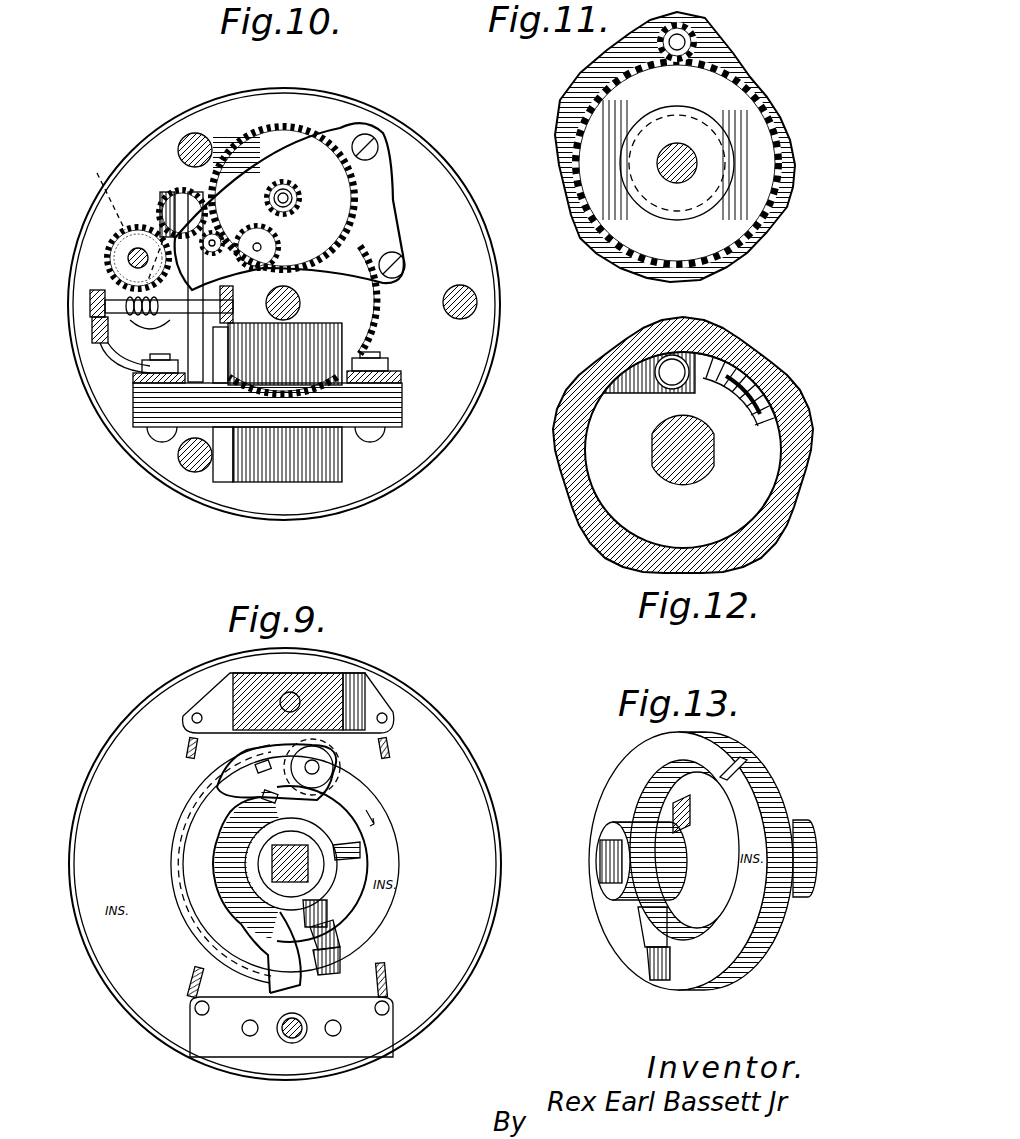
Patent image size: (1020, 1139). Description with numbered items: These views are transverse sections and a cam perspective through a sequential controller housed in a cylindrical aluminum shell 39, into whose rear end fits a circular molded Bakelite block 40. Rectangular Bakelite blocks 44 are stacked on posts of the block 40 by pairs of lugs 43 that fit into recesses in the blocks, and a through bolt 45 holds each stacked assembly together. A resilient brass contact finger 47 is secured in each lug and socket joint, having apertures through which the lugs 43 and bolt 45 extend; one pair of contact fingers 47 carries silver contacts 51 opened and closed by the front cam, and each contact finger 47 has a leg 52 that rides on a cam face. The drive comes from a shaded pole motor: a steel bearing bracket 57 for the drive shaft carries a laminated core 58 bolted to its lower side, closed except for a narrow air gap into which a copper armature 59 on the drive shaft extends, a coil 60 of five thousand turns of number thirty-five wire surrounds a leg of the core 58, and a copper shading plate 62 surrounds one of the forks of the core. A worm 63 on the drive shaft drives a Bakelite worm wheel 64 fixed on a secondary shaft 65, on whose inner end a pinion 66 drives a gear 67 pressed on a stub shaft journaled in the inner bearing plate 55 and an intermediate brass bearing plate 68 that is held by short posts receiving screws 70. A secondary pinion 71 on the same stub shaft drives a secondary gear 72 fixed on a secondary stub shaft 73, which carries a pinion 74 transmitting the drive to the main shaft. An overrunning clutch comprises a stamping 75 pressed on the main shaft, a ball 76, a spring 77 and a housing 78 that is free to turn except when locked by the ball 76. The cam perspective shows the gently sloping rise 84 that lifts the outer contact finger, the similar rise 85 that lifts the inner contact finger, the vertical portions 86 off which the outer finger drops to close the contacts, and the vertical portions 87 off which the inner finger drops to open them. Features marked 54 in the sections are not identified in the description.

In FIG. 10, the cylindrical aluminum shell 39 is at (497, 282).
In FIG. 9, the cylindrical aluminum shell 39 is at (114, 986).
In FIG. 9, the circular molded Bakelite block 40 is at (412, 960).
In FIG. 9, the lugs 43 is at (251, 1036).
In FIG. 9, the rectangular Bakelite blocks 44 is at (225, 680).
In FIG. 9, the through bolt 45 is at (265, 675).
In FIG. 9, the resilient brass contact finger 47 is at (225, 820).
In FIG. 9, the silver contacts 51 is at (322, 767).
In FIG. 9, the leg 52 is at (255, 770).
In FIG. 10, the screw holes 54 is at (188, 135).
In FIG. 10, the inner bearing plate 55 is at (325, 516).
In FIG. 11, the inner bearing plate 55 is at (790, 200).
In FIG. 10, the steel bearing bracket 57 is at (125, 361).
In FIG. 10, the laminated core 58 is at (402, 394).
In FIG. 10, the copper armature 59 is at (97, 334).
In FIG. 10, the coil 60 is at (355, 489).
In FIG. 10, the copper shading plate 62 is at (222, 482).
In FIG. 10, the worm 63 is at (110, 300).
In FIG. 10, the Bakelite worm wheel 64 is at (128, 246).
In FIG. 10, the secondary shaft 65 is at (126, 256).
In FIG. 10, the pinion 66 is at (97, 173).
In FIG. 10, the gear 67 is at (170, 200).
In FIG. 10, the intermediate brass bearing plate 68 is at (386, 140).
In FIG. 10, the screws 70 is at (365, 134).
In FIG. 10, the secondary pinion 71 is at (205, 222).
In FIG. 10, the secondary gear 72 is at (256, 134).
In FIG. 10, the secondary stub shaft 73 is at (293, 191).
In FIG. 10, the pinion 74 is at (340, 205).
In FIG. 11, the pinion 74 is at (692, 36).
In FIG. 12, the stamping 75 is at (762, 478).
In FIG. 12, the ball 76 is at (660, 358).
In FIG. 12, the spring 77 is at (762, 405).
In FIG. 10, the housing 78 is at (396, 240).
In FIG. 11, the housing 78 is at (762, 168).
In FIG. 12, the housing 78 is at (752, 347).
In FIG. 9, the gently sloping rise 84 is at (362, 832).
In FIG. 13, the gently sloping rise 84 is at (676, 822).
In FIG. 9, the gentle rise 85 is at (342, 945).
In FIG. 13, the gentle rise 85 is at (650, 965).
In FIG. 9, the vertical portions 86 is at (383, 886).
In FIG. 13, the vertical portions 86 is at (640, 925).
In FIG. 9, the vertical portions 87 is at (362, 852).
In FIG. 13, the vertical portions 87 is at (740, 760).